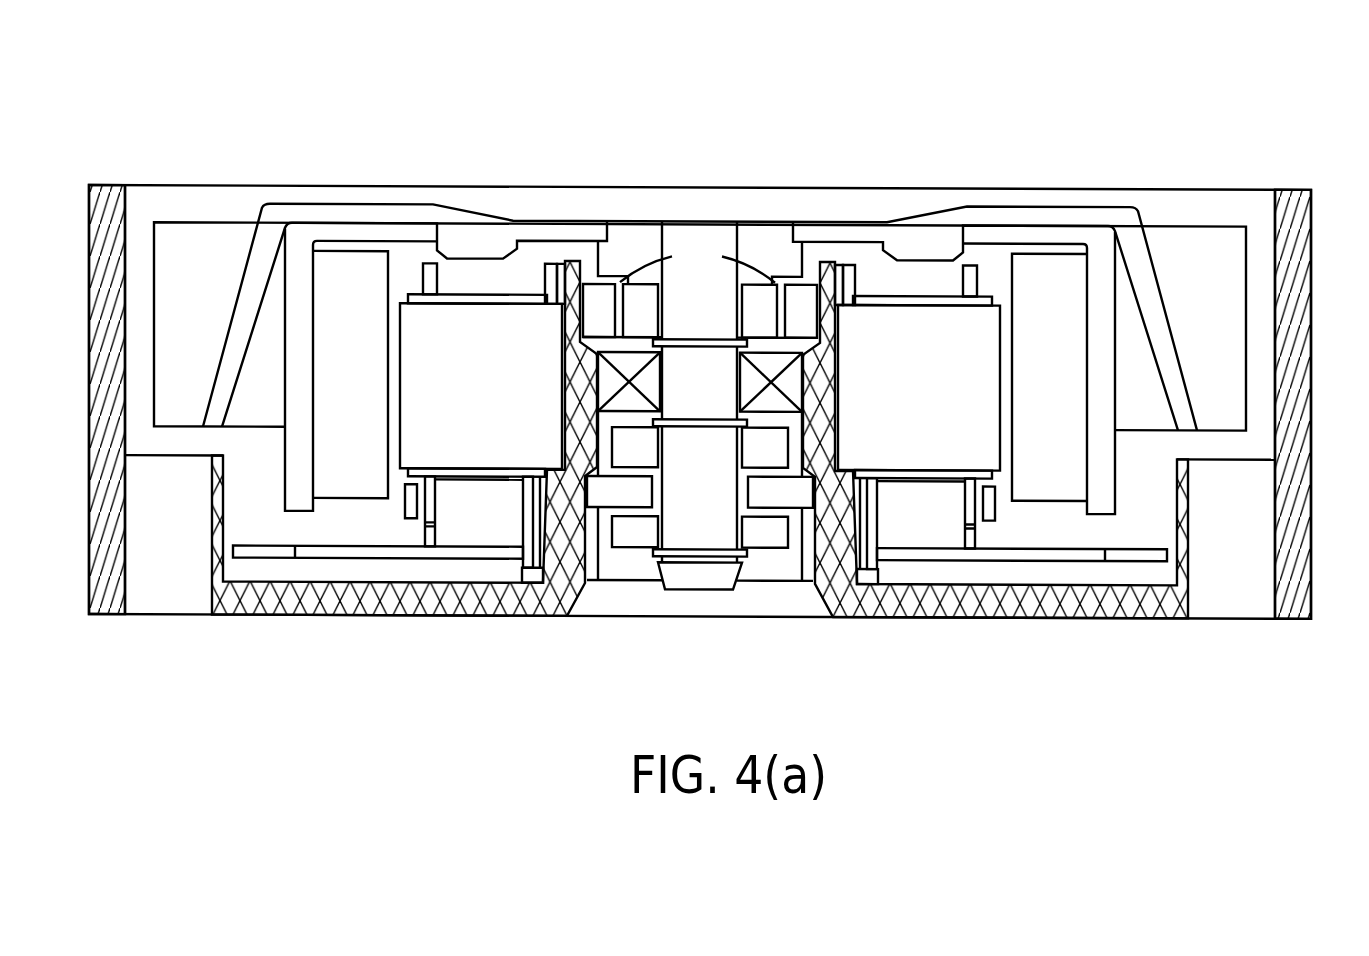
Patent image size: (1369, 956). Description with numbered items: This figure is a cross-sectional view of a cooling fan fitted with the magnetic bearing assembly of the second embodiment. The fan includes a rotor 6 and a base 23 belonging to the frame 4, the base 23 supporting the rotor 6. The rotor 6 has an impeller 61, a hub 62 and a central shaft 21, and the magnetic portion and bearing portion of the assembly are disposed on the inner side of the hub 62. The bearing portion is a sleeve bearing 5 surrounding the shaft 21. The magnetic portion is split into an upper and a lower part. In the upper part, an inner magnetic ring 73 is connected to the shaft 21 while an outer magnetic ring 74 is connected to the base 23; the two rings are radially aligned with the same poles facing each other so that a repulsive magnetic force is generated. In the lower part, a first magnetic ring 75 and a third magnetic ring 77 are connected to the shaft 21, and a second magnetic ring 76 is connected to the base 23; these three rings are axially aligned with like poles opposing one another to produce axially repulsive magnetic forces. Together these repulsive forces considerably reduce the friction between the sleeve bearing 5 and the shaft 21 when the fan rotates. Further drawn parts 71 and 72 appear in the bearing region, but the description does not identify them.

The frame 4 is at (1293, 280).
The sleeve bearing 5 is at (835, 388).
The rotor 6 is at (1066, 203).
The impeller 61 is at (1210, 257).
The hub 62 is at (1160, 322).
The shaft 21 is at (703, 233).
The base 23 is at (790, 390).
The flange washer 71 is at (703, 340).
The bearing 72 is at (748, 385).
The inner magnetic ring 73 is at (652, 307).
The outer magnetic ring 74 is at (697, 262).
The first magnetic ring 75 is at (750, 452).
The second magnetic ring 76 is at (750, 496).
The third magnetic ring 77 is at (752, 535).